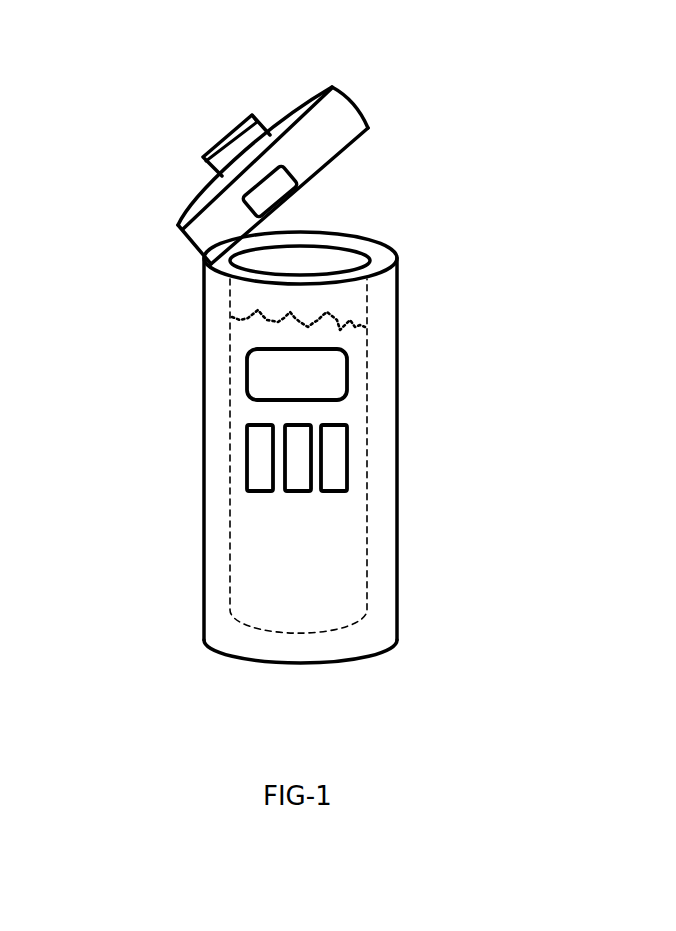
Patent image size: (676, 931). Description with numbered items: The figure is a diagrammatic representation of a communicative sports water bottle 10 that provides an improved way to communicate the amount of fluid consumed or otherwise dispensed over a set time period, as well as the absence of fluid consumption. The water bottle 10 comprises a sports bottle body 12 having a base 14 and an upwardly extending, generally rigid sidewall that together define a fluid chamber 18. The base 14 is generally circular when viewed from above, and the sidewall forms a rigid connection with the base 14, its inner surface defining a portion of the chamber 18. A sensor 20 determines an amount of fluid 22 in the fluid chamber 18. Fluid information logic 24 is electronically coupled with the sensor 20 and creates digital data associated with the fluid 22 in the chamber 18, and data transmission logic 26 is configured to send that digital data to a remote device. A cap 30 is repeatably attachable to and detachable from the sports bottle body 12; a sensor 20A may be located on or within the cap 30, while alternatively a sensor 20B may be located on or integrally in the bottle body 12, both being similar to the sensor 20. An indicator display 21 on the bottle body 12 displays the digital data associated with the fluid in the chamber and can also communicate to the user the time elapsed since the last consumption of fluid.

The communicative sports water bottle 10 is at (514, 156).
The sports bottle body 12 is at (382, 570).
The base 14 is at (358, 661).
The fluid chamber 18 is at (314, 261).
The sensor 20 is at (242, 458).
The sensor 20A is at (272, 188).
The sensor 20B is at (260, 458).
The indicator display 21 is at (270, 375).
The fluid 22 is at (340, 309).
The fluid information logic 24 is at (292, 499).
The data transmission logic 26 is at (354, 461).
The cap 30 is at (203, 193).